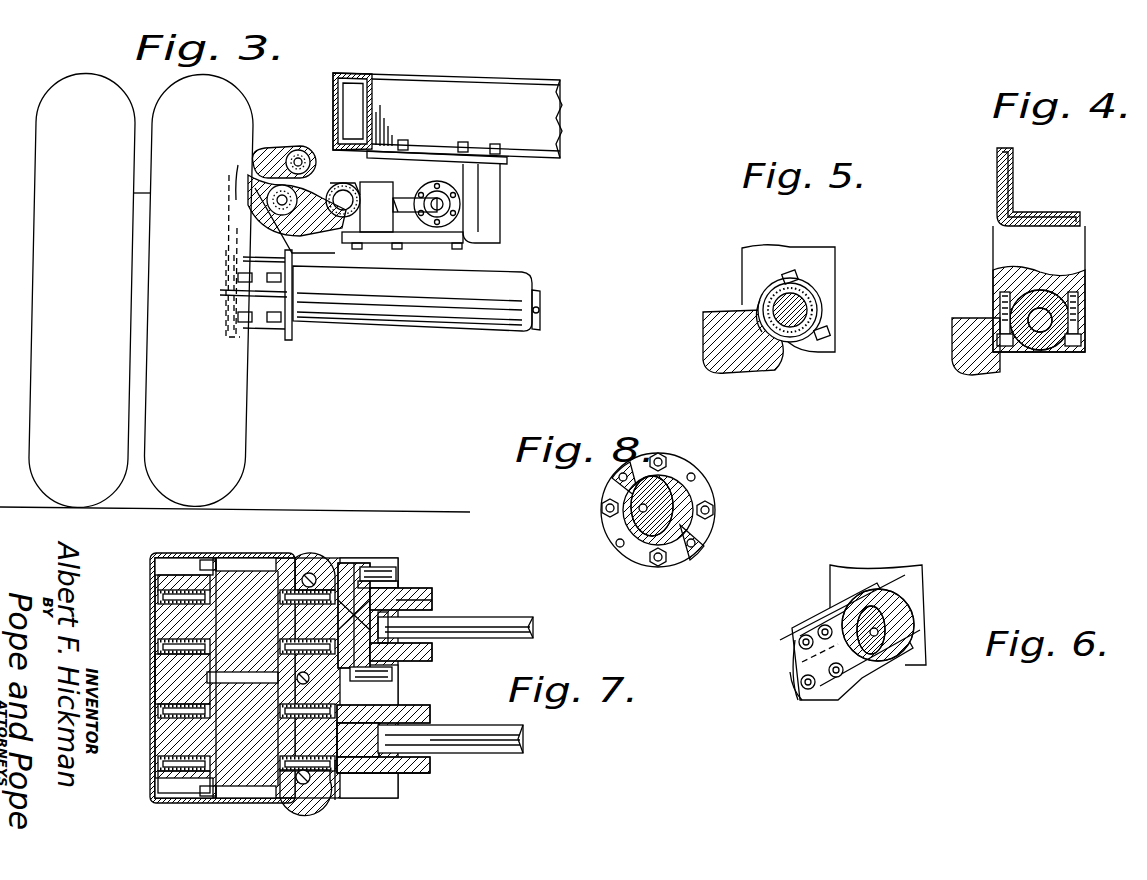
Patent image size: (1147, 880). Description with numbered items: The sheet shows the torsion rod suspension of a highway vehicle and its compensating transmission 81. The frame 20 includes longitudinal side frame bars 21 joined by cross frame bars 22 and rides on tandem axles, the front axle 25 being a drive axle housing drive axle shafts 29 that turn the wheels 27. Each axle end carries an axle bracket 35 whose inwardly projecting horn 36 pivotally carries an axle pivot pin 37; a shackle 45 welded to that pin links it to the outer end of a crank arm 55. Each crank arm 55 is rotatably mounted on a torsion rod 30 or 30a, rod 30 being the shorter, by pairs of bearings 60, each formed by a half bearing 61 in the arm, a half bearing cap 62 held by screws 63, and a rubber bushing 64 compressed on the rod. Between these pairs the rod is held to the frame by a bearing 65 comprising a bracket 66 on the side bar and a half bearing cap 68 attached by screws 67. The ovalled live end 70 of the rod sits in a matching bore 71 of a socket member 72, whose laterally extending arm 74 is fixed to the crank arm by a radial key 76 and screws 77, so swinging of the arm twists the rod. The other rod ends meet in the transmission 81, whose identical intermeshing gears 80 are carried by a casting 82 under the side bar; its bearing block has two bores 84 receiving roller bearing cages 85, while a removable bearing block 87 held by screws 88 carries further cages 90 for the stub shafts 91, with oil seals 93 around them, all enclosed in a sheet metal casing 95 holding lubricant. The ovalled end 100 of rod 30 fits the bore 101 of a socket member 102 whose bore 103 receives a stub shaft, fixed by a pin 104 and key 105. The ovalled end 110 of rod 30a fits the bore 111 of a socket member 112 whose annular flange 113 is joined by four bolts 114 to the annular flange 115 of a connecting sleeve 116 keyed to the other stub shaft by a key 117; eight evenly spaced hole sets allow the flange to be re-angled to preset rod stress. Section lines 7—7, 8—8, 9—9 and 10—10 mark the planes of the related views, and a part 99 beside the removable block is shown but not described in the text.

In FIG. 3, the section line 7— 7 is at (205, 197).
In FIG. 7, the section line 8— 8 is at (412, 588).
In FIG. 3, the section line 9— 9 is at (270, 172).
In FIG. 7, the section line 10— 10 is at (238, 528).
In FIG. 3, the frame 20 is at (478, 47).
In FIG. 3, the longitudinal side frame bars 21 is at (366, 74).
In FIG. 4, the longitudinal side frame bars 21 is at (1016, 174).
In FIG. 3, the cross frame bars 22 is at (566, 104).
In FIG. 3, the front axle 25 is at (500, 334).
In FIG. 3, the wheels 27 is at (177, 101).
In FIG. 3, the drive axle shafts 29 is at (546, 310).
In FIG. 3, the torsion rod 30 is at (351, 258).
In FIG. 5, the torsion rod 30 is at (787, 340).
In FIG. 4, the torsion rod 30 is at (1038, 352).
In FIG. 6, the torsion rod 30 is at (900, 600).
In FIG. 7, the torsion rod 30 is at (525, 735).
In FIG. 3, the torsion rod 30a is at (428, 232).
In FIG. 7, the torsion rod 30a is at (524, 617).
In FIG. 3, the axle bracket 35 is at (264, 330).
In FIG. 3, the arm or horn 36 is at (265, 158).
In FIG. 3, the axle pivot pin 37 is at (300, 150).
In FIG. 3, the shackle 45 is at (262, 188).
In FIG. 3, the crank arm 55 is at (292, 232).
In FIG. 5, the crank arm 55 is at (700, 336).
In FIG. 4, the crank arm 55 is at (952, 368).
In FIG. 3, the bearings 60 is at (362, 186).
In FIG. 5, the bearings 60 is at (826, 274).
In FIG. 5, the half bearing 61 is at (760, 298).
In FIG. 5, the half bearing cap 62 is at (820, 297).
In FIG. 5, the screws 63 is at (782, 270).
In FIG. 5, the rubber bushing 64 is at (822, 308).
In FIG. 3, the bearing 65 is at (405, 240).
In FIG. 4, the bearing 65 is at (984, 282).
In FIG. 6, the bearing 65 is at (928, 588).
In FIG. 4, the bracket 66 is at (1072, 252).
In FIG. 6, the bracket 66 is at (880, 566).
In FIG. 4, the screws 67 is at (1005, 348).
In FIG. 4, the half bearing cap 68 is at (1058, 350).
In FIG. 6, the half bearing cap 68 is at (915, 658).
In FIG. 6, the live end of torsion rod 70 is at (866, 680).
In FIG. 6, the bore 71 is at (796, 640).
In FIG. 6, the socket member 72 is at (910, 617).
In FIG. 6, the laterally extending arm 74 is at (792, 675).
In FIG. 6, the radially extending key 76 is at (820, 652).
In FIG. 6, the screws 77 is at (834, 693).
In FIG. 7, the gears 80 is at (240, 690).
In FIG. 3, the compensating transmission 81 is at (510, 190).
In FIG. 7, the compensating transmission 81 is at (182, 548).
In FIG. 7, the casting 82 is at (162, 584).
In FIG. 7, the bores 84 is at (162, 700).
In FIG. 7, the cage of roller bearings 85 is at (162, 612).
In FIG. 7, the removable bearing block 87 is at (292, 588).
In FIG. 7, the screws 88 is at (312, 790).
In FIG. 7, the roller bearing cages 90 is at (318, 588).
In FIG. 7, the stub shafts 91 is at (340, 648).
In FIG. 7, the oil seals 93 is at (334, 578).
In FIG. 7, the sheet metal shell 95 is at (162, 792).
In FIG. 7, the cap flange 99 is at (338, 790).
In FIG. 7, the end of torsion rod 100 is at (381, 740).
In FIG. 7, the ovalled bore 101 is at (470, 744).
In FIG. 7, the socket member 102 is at (432, 766).
In FIG. 7, the bore 103 is at (416, 773).
In FIG. 7, the pin 104 is at (345, 772).
In FIG. 7, the key 105 is at (350, 705).
In FIG. 8, the end of torsion rod 110 is at (646, 534).
In FIG. 7, the end of torsion rod 110 is at (402, 627).
In FIG. 8, the ovalled bore 111 is at (640, 514).
In FIG. 7, the ovalled bore 111 is at (435, 610).
In FIG. 3, the socket member 112 is at (468, 226).
In FIG. 8, the socket member 112 is at (698, 522).
In FIG. 7, the socket member 112 is at (434, 654).
In FIG. 8, the annular flange 113 is at (708, 487).
In FIG. 7, the annular flange 113 is at (400, 567).
In FIG. 8, the bolts 114 is at (601, 507).
In FIG. 7, the bolts 114 is at (400, 574).
In FIG. 7, the annular flange 115 is at (368, 565).
In FIG. 7, the connecting sleeve 116 is at (352, 563).
In FIG. 7, the key 117 is at (437, 595).